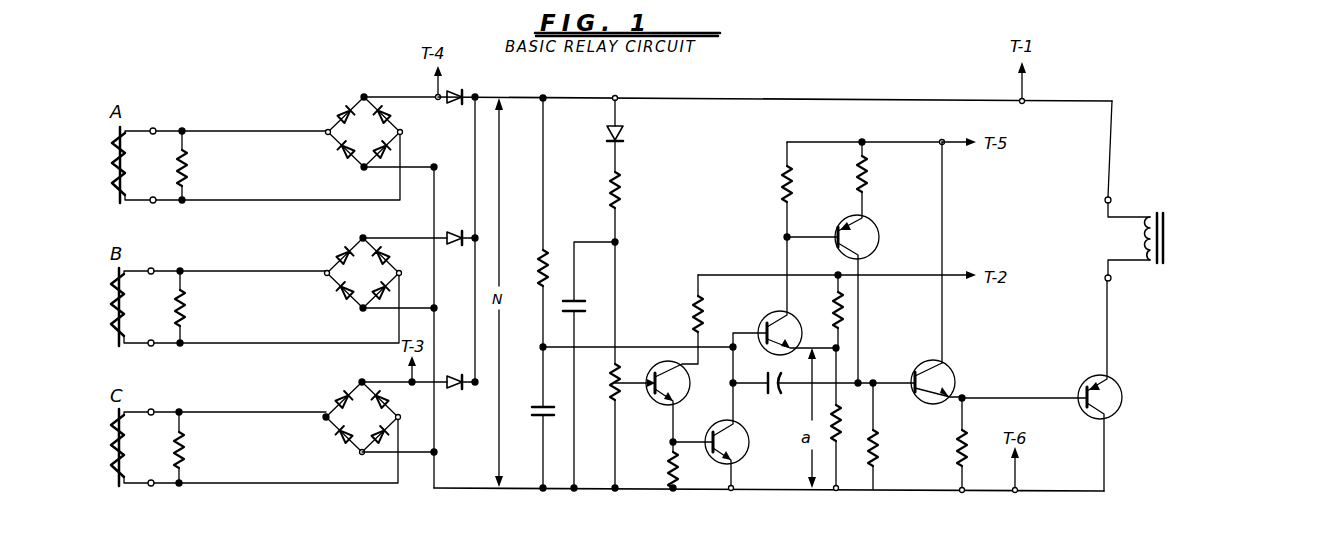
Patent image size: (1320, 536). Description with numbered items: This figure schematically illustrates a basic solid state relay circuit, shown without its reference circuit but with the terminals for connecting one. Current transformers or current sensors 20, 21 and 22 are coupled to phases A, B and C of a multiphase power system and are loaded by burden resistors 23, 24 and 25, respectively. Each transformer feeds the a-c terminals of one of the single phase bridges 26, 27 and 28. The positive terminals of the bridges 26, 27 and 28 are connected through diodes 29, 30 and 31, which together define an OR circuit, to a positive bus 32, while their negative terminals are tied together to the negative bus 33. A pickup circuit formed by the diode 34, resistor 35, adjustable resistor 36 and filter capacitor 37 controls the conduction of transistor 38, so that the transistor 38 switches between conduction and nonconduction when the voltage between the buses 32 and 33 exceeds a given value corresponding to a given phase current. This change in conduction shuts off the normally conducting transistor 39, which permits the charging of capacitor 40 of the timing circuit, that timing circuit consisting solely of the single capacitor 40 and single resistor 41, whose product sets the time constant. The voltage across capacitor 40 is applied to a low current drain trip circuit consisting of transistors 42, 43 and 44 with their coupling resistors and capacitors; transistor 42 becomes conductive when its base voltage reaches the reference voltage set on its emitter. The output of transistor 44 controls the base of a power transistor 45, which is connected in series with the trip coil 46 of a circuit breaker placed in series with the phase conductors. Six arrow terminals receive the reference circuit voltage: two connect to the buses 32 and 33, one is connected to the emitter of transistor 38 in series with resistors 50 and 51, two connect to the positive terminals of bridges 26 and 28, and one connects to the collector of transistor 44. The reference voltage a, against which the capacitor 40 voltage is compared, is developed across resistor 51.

The current transformer 20 is at (110, 168).
The current transformer 21 is at (108, 307).
The current transformer 22 is at (108, 447).
The burden resistor 23 is at (188, 171).
The burden resistor 24 is at (186, 314).
The burden resistor 25 is at (185, 455).
The single phase bridge 26 is at (330, 144).
The single phase bridge 27 is at (356, 303).
The single phase bridge 28 is at (340, 421).
The diode 29 is at (455, 107).
The diode 30 is at (458, 226).
The diode 31 is at (455, 375).
The positive bus 32 is at (572, 97).
The negative bus 33 is at (523, 490).
The diode 34 is at (622, 134).
The resistor 35 is at (624, 202).
The adjustable resistor 36 is at (598, 400).
The filter capacitor 37 is at (604, 296).
The transistor 38 is at (652, 401).
The transistor 39 is at (750, 439).
The capacitor 40 is at (532, 409).
The resistor 41 is at (537, 254).
The transistor 42 is at (769, 312).
The transistor 43 is at (879, 224).
The transistor 44 is at (951, 364).
The power transistor 45 is at (1122, 394).
The trip coil 46 is at (1158, 266).
The resistor 50 is at (832, 310).
The resistor 51 is at (841, 415).